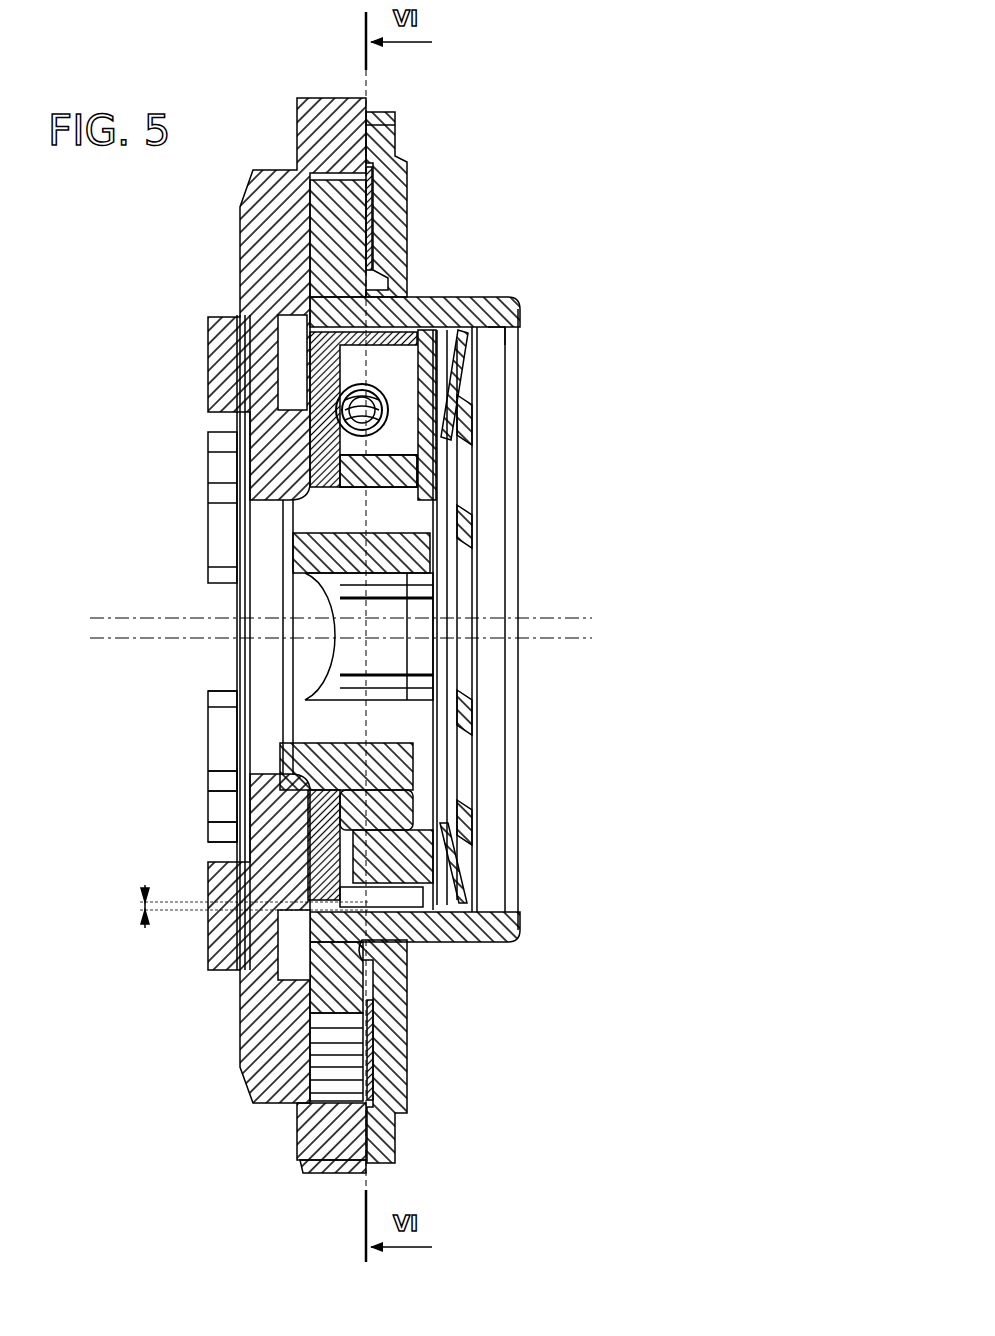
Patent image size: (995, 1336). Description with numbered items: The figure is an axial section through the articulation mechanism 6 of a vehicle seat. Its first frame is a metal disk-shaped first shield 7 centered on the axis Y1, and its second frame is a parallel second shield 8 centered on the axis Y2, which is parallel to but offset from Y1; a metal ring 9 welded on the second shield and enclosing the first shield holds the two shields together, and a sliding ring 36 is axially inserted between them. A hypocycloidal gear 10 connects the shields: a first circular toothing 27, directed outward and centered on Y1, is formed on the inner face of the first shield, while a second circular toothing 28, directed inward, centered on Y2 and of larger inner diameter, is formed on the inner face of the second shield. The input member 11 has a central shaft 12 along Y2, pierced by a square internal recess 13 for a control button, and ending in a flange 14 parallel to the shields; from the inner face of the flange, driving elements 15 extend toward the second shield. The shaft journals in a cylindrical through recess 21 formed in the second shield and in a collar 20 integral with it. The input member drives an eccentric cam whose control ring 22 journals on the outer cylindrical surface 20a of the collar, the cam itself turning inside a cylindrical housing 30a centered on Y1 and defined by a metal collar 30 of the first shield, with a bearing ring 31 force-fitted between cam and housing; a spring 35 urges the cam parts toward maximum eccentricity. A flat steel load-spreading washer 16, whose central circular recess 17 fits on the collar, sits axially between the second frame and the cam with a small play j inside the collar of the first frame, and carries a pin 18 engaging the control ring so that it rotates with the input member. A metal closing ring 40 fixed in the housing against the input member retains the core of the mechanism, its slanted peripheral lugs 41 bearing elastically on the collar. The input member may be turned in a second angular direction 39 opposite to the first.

The articulation mechanism 6 is at (560, 68).
The first shield 7 is at (448, 292).
The second shield 8 is at (292, 132).
The metal ring 9 is at (397, 190).
The hypocycloidal gear 10 is at (303, 1083).
The input member 11 is at (466, 742).
The central shaft 12 is at (415, 553).
The internal recess 13 is at (422, 610).
The flange 14 is at (430, 470).
The driving element 15 is at (405, 860).
The load-spreading washer 16 is at (330, 805).
The central circular recess 17 is at (330, 790).
The pin 18 is at (320, 840).
The collar 20 is at (320, 520).
The outer cylindrical surface 20a is at (310, 503).
The cylindrical through recess 21 is at (352, 500).
The control ring 22 is at (410, 805).
The first circular toothing 27 is at (380, 1050).
The second circular toothing 28 is at (337, 1095).
The metal collar 30 is at (482, 300).
The cylindrical housing 30a is at (512, 324).
The bearing ring 31 is at (400, 330).
The spring 35 is at (388, 392).
The sliding ring 36 is at (375, 240).
The second angular direction 39 is at (446, 910).
The closing ring 40 is at (447, 385).
The peripheral lugs 41 is at (468, 542).
The play j is at (244, 906).
The axis Y1 is at (142, 616).
The axis Y2 is at (577, 641).